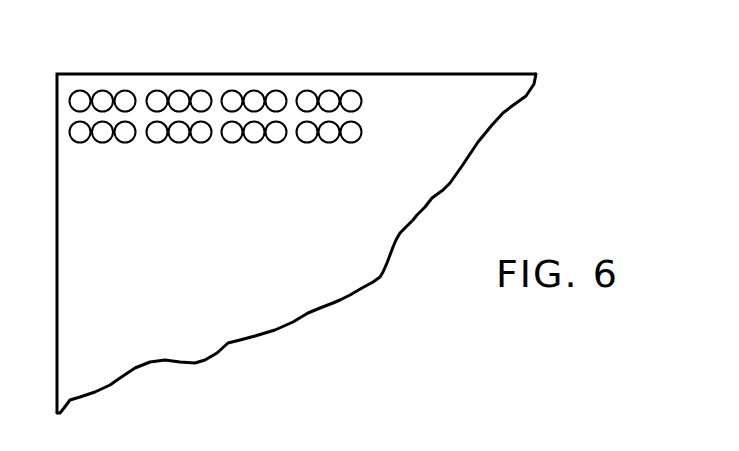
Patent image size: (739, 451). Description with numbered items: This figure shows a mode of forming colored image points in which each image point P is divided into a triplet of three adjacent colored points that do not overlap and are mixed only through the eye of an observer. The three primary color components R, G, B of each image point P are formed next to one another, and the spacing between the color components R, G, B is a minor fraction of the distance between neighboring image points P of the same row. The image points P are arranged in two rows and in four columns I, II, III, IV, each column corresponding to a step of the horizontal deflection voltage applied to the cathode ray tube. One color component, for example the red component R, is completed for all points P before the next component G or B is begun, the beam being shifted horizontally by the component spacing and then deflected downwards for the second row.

The column I is at (106, 36).
The column II is at (185, 36).
The column III is at (264, 36).
The column IV is at (338, 19).
The red color component R is at (80, 143).
The green color component G is at (102, 143).
The blue color component B is at (125, 143).
The image point P is at (295, 145).